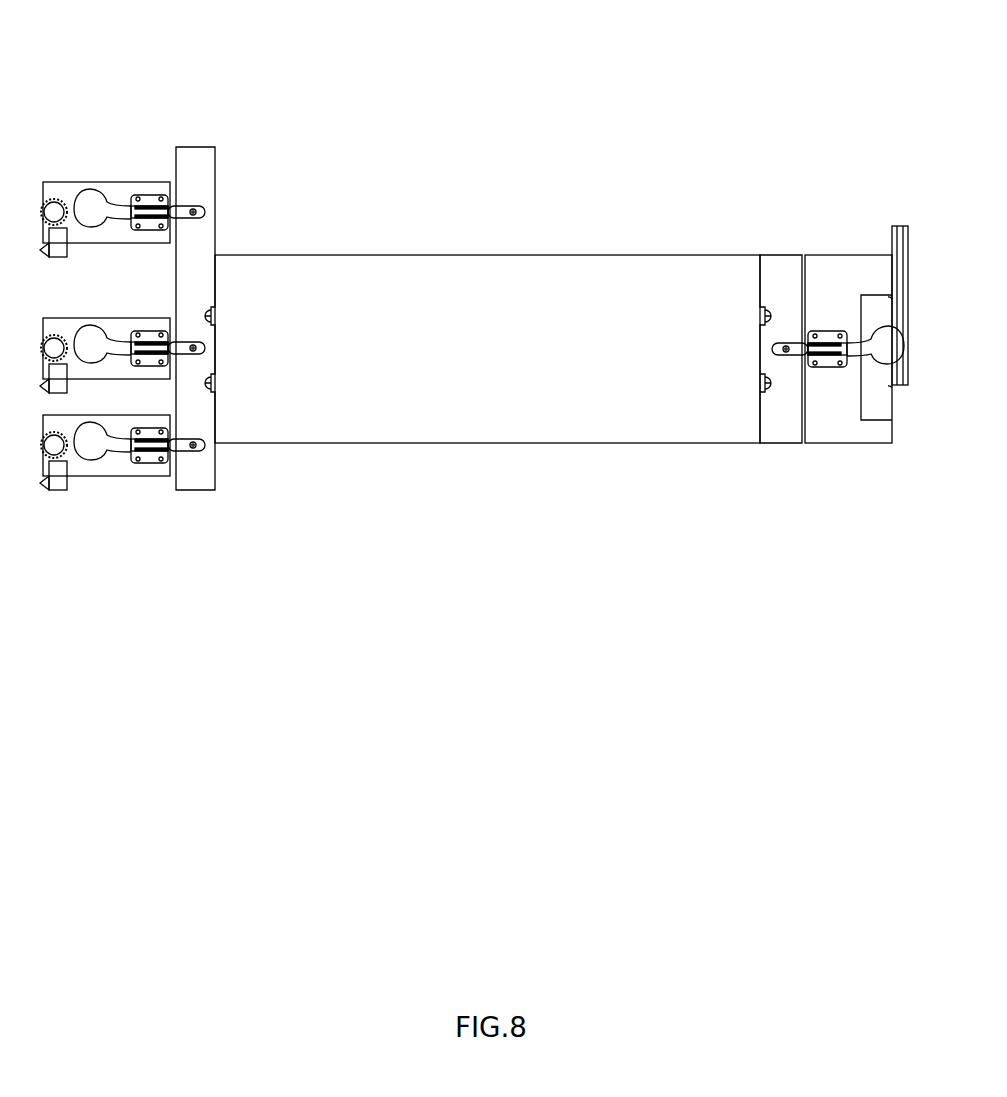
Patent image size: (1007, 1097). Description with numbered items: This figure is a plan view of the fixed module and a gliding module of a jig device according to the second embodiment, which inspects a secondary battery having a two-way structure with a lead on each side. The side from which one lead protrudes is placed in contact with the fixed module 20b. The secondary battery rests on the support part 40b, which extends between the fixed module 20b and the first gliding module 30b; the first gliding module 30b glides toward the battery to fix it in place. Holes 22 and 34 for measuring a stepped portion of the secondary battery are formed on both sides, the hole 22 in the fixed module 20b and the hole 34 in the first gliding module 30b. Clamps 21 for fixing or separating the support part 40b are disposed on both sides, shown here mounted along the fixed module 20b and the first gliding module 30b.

The fixed module 20b is at (157, 96).
The clamp 21 is at (92, 338).
The hole for measuring stepped portion 22 is at (214, 316).
The first gliding module 30b is at (852, 166).
The hole for measuring stepped portion 34 is at (762, 316).
The support part 40b is at (512, 407).